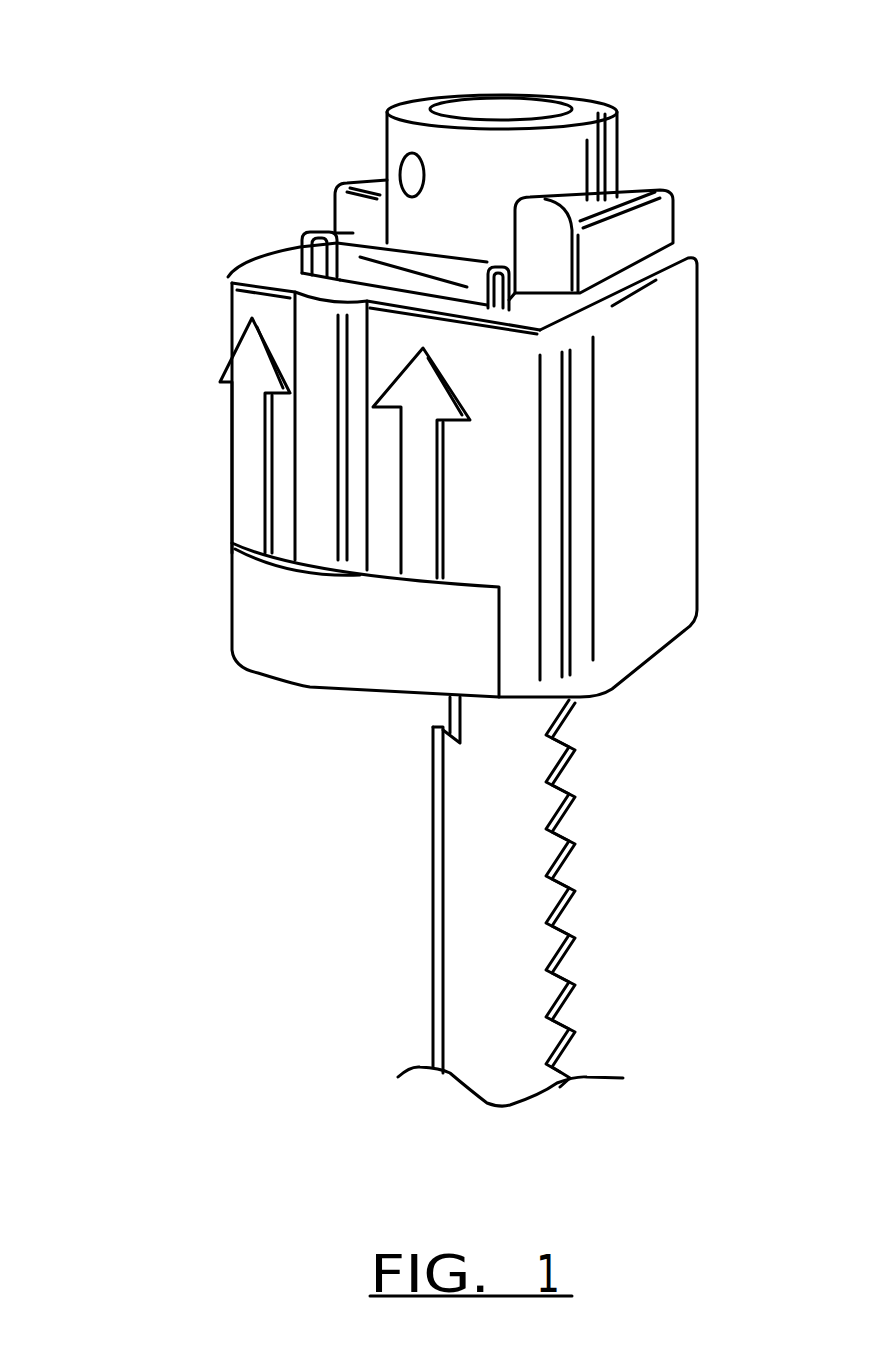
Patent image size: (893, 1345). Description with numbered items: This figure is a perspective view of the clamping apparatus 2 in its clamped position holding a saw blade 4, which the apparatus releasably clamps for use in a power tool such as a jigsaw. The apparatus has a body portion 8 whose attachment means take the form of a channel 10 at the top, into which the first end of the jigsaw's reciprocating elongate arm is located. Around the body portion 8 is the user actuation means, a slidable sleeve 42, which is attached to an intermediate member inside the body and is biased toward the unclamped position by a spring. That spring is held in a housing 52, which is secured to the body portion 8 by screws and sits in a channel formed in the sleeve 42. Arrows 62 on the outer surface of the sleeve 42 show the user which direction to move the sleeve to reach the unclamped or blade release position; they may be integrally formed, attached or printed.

The clamping apparatus 2 is at (182, 617).
The saw blade 4 is at (517, 897).
The body portion 8 is at (623, 160).
The channel 10 is at (510, 112).
The sleeve 42 is at (231, 623).
The housing 52 is at (402, 265).
The arrows 62 is at (245, 362).